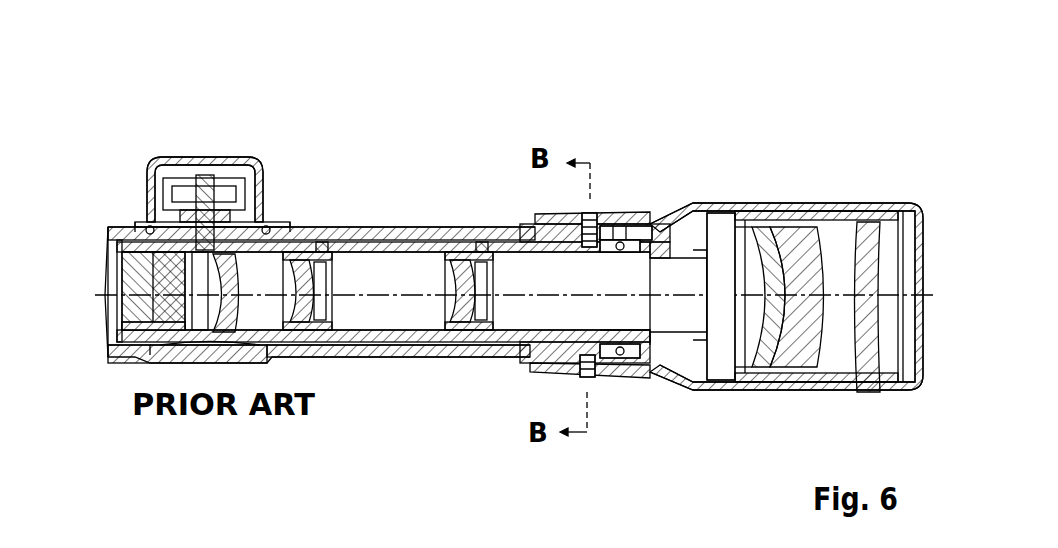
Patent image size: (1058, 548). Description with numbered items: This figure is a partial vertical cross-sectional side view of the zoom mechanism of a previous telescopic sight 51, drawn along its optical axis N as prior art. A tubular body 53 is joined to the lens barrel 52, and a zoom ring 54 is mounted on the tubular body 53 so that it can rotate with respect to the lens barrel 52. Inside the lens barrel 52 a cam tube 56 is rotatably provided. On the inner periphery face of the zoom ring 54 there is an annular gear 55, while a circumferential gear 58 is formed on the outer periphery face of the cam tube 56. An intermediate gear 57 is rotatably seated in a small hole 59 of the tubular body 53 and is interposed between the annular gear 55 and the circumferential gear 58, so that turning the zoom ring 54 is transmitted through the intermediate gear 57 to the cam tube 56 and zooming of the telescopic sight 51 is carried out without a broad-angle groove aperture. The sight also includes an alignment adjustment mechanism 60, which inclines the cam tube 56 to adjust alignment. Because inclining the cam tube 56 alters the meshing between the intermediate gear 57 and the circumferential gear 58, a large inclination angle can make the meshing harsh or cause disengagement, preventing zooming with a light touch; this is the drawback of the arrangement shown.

The telescopic sight 51 is at (388, 224).
The lens barrel 52 is at (475, 225).
The tubular body 53 is at (553, 363).
The zoom ring 54 is at (613, 212).
The annular gear 55 is at (593, 380).
The cam tube 56 is at (347, 245).
The intermediate gear 57 is at (612, 212).
The circumferential gear 58 is at (607, 370).
The small hole 59 is at (622, 212).
The alignment adjustment mechanism 60 is at (200, 148).
The optical axis reference N is at (105, 292).